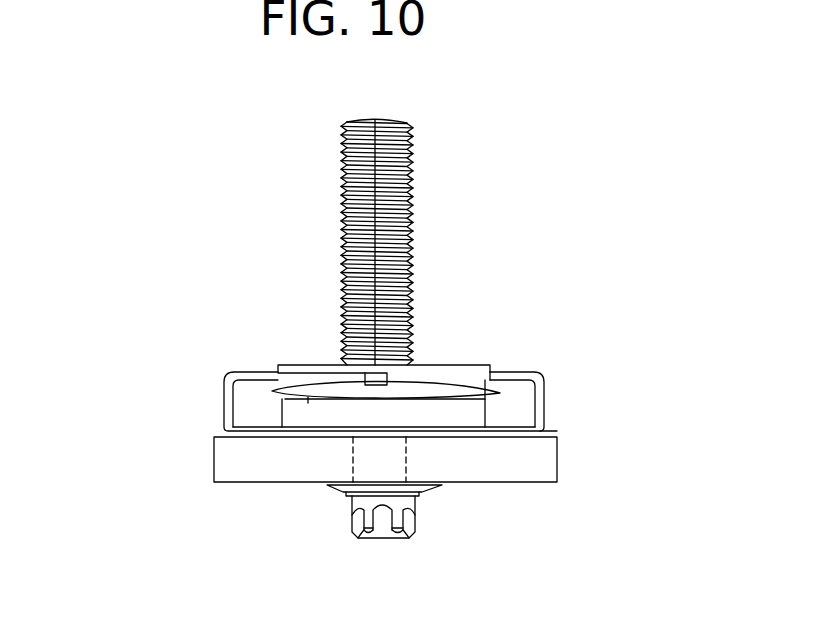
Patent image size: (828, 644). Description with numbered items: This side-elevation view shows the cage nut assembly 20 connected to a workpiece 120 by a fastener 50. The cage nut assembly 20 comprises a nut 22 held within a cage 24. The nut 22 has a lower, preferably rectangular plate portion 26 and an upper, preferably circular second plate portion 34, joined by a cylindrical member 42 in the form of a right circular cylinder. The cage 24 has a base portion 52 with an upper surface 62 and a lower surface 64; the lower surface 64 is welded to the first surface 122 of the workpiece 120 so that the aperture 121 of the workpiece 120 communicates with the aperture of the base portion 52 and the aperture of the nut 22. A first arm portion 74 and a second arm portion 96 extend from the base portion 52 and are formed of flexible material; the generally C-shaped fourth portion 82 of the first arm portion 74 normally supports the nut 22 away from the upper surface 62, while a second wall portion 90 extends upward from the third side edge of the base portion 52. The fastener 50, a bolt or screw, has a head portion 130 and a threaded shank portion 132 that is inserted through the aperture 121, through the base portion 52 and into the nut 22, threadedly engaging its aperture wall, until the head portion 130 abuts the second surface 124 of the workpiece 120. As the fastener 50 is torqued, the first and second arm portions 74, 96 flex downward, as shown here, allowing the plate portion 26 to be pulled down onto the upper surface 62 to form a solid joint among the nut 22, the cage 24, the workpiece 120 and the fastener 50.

The cage nut assembly 20 is at (382, 421).
The nut 22 is at (457, 364).
The cage 24 is at (402, 370).
The plate portion 26 is at (310, 413).
The second plate portion 34 is at (428, 366).
The cylindrical member 42 is at (432, 400).
The fastener 50 is at (417, 225).
The base portion 52 is at (497, 433).
The upper surface 62 is at (238, 413).
The lower surface 64 is at (258, 438).
The first arm portion 74 is at (231, 370).
The fourth portion 82 is at (276, 388).
The second wall portion 90 is at (540, 382).
The second arm portion 96 is at (513, 364).
The workpiece 120 is at (402, 518).
The aperture 121 is at (353, 457).
The first surface 122 is at (553, 431).
The second surface 124 is at (548, 483).
The head portion 130 is at (398, 530).
The threaded shank portion 132 is at (410, 215).